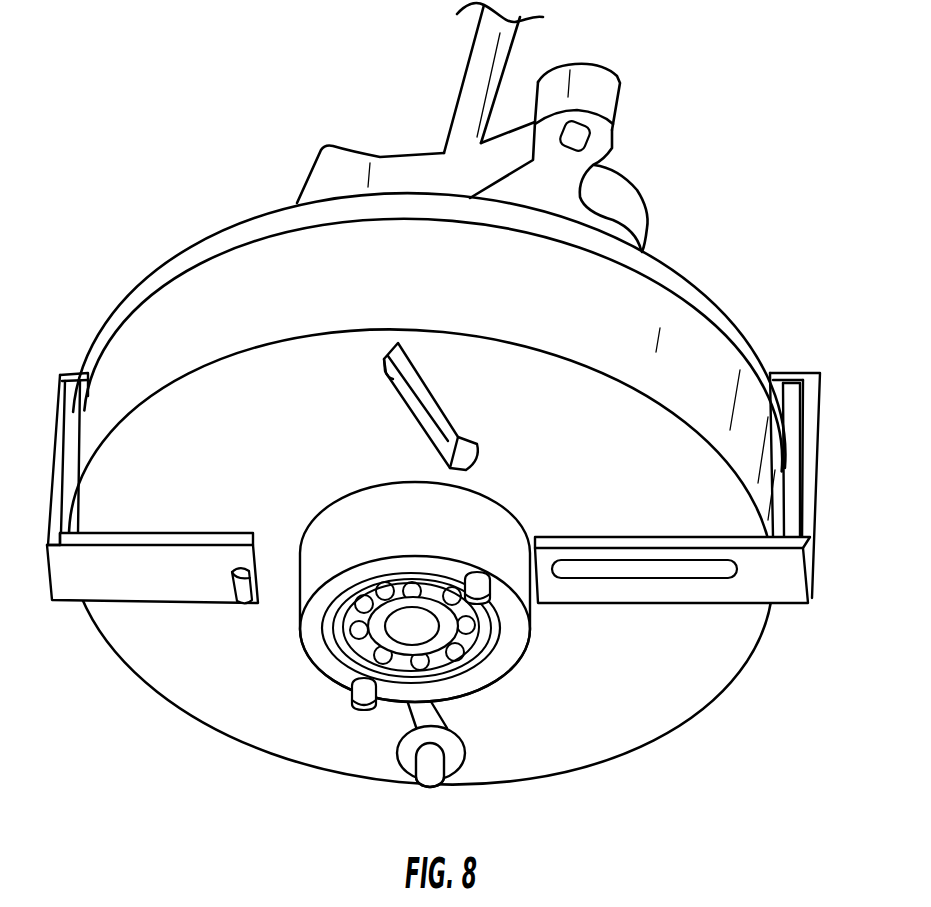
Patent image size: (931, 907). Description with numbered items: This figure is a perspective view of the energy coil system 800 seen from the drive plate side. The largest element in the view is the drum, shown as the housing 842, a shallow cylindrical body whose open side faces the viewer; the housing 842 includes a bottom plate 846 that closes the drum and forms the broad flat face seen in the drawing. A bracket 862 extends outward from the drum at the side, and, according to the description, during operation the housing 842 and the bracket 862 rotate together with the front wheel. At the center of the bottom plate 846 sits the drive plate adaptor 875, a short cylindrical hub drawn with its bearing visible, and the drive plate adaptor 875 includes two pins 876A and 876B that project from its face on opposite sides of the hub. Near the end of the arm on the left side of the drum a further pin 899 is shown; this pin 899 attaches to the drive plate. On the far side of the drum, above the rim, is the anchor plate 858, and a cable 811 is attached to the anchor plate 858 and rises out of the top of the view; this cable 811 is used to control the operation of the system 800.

The energy coil system 800 is at (190, 112).
The cable 811 is at (479, 52).
The anchor plate 858 is at (557, 191).
The housing 842 is at (398, 292).
The bottom plate 846 is at (648, 652).
The bracket 862 is at (783, 592).
The drive plate adaptor 875 is at (420, 522).
The pin 876A is at (480, 607).
The pin 876B is at (360, 713).
The pin 899 is at (228, 625).